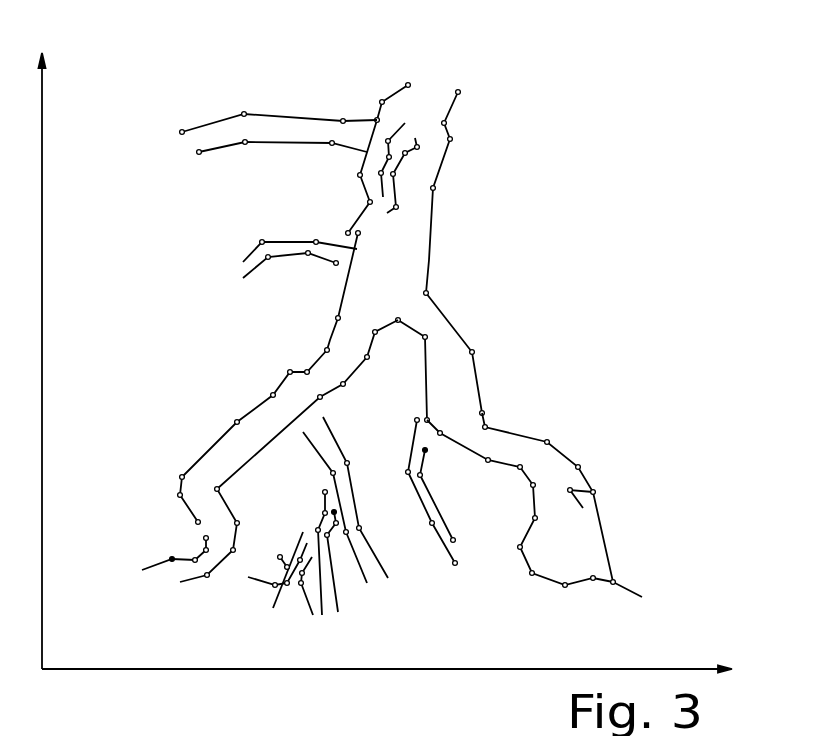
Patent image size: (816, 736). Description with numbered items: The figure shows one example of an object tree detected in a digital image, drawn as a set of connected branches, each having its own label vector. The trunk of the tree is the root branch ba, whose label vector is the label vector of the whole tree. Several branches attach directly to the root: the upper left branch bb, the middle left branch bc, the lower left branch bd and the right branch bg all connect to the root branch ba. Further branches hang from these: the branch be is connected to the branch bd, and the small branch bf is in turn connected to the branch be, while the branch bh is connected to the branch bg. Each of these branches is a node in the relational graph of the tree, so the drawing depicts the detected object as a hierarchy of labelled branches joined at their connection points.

The root branch ba is at (412, 252).
The branch bb is at (257, 123).
The branch bc is at (281, 245).
The branch bd is at (260, 420).
The branch be is at (330, 447).
The branch bf is at (323, 522).
The branch bg is at (518, 450).
The branch bh is at (443, 530).